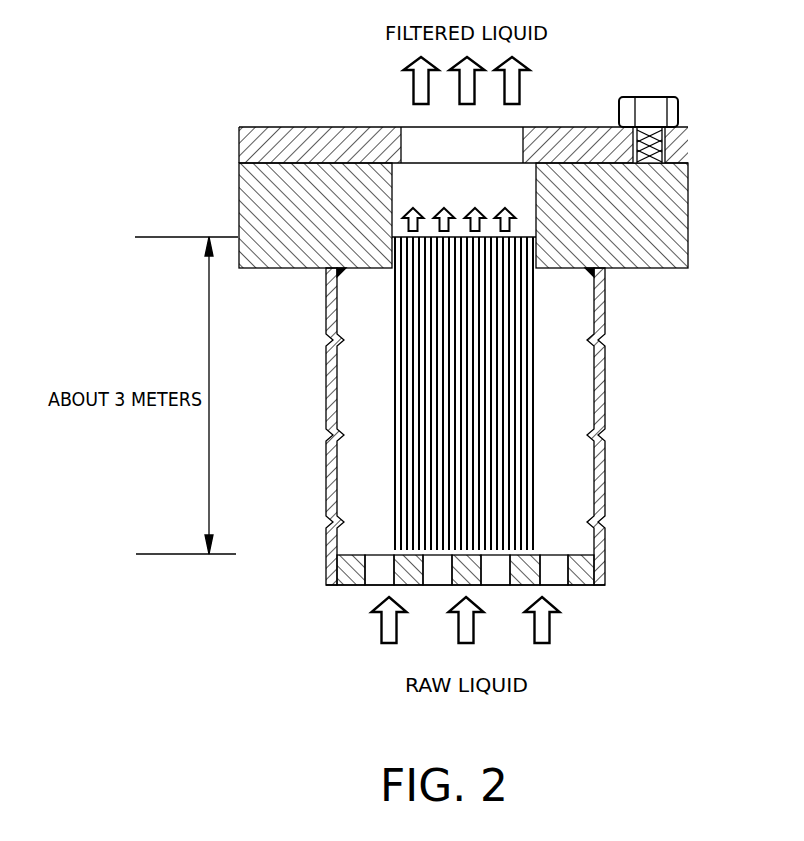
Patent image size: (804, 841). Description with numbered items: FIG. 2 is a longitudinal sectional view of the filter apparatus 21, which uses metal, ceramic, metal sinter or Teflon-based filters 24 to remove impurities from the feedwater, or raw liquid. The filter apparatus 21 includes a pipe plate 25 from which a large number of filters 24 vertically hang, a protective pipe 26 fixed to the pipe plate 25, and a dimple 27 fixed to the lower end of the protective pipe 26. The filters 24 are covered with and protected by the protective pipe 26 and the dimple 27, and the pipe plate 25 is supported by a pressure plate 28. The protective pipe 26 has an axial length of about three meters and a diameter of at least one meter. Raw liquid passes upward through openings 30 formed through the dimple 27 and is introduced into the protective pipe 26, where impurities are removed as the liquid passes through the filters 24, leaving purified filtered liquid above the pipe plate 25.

The filter apparatus 21 is at (268, 103).
The filter 24 is at (497, 445).
The pipe plate 25 is at (688, 211).
The protective pipe 26 is at (605, 386).
The dimple 27 is at (583, 587).
The pressure plate 28 is at (593, 127).
The openings 30 is at (373, 584).